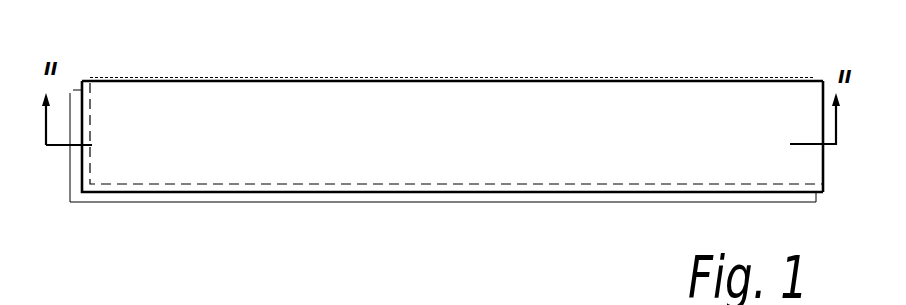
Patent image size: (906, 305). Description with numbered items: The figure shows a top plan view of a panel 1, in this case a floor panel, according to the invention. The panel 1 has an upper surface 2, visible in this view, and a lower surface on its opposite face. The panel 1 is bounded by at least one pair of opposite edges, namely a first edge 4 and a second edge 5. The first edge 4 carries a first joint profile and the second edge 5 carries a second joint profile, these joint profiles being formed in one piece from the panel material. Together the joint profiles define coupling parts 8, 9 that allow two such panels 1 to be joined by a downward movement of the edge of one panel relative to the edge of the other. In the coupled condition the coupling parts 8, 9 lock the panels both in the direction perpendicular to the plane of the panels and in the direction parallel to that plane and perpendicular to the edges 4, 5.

The panel 1 is at (372, 54).
The upper surface 2 is at (622, 94).
The first edge 4 is at (828, 98).
The second edge 5 is at (67, 90).
The coupling part 8 is at (825, 155).
The coupling part 9 is at (73, 158).